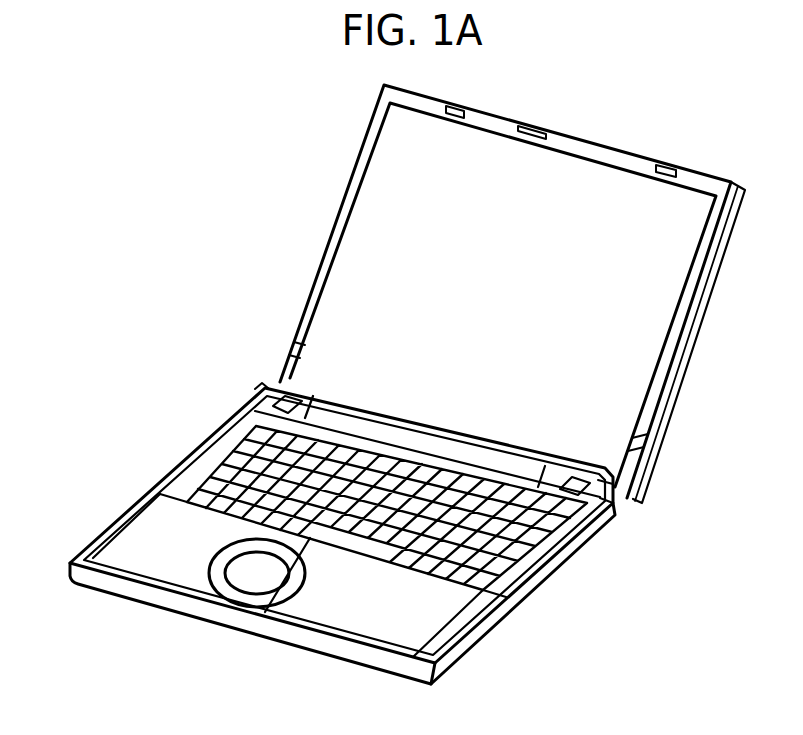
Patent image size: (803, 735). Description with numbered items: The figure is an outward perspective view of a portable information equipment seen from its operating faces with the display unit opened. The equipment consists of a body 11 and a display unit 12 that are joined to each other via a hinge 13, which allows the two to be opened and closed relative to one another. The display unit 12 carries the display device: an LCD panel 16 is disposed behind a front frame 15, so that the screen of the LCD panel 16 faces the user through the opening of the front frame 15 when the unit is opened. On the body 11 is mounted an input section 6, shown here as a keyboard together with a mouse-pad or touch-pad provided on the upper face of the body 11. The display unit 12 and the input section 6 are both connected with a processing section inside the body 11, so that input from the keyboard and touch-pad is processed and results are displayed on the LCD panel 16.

The input section 6 is at (225, 572).
The body 11 is at (348, 541).
The display unit 12 is at (521, 296).
The hinge 13 is at (259, 394).
The front frame 15 is at (343, 213).
The LCD panel 16 is at (644, 507).